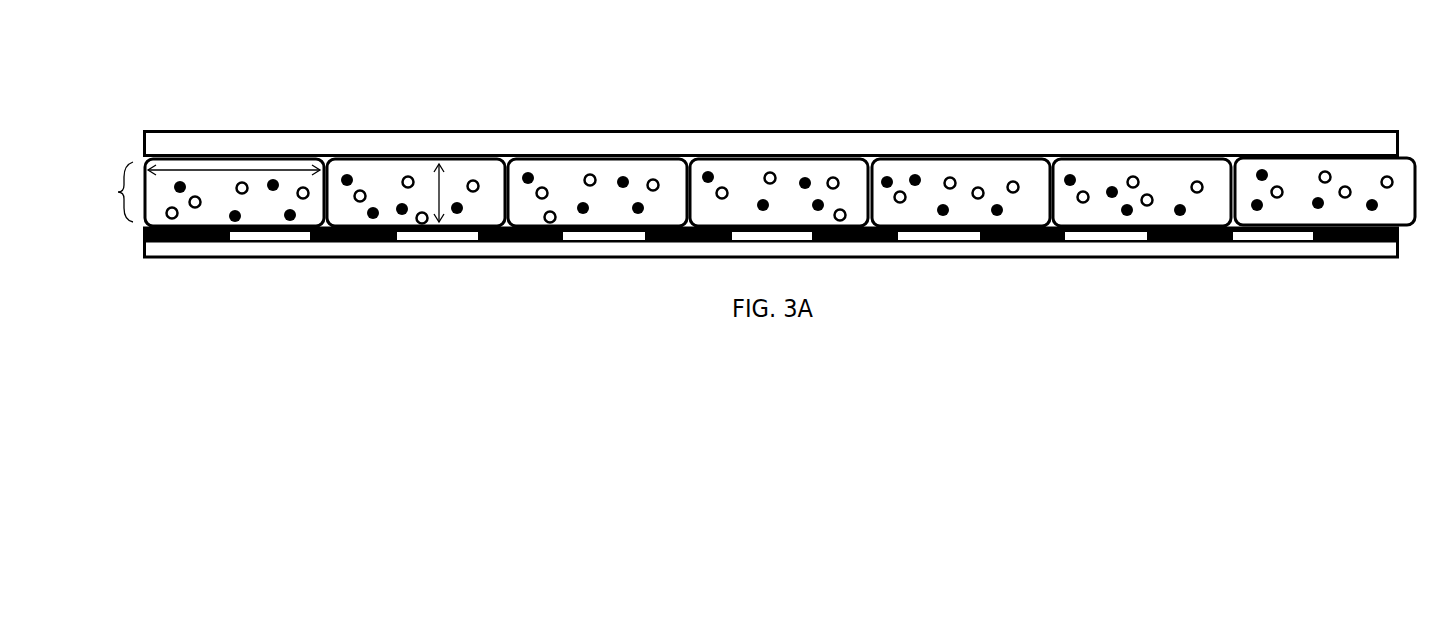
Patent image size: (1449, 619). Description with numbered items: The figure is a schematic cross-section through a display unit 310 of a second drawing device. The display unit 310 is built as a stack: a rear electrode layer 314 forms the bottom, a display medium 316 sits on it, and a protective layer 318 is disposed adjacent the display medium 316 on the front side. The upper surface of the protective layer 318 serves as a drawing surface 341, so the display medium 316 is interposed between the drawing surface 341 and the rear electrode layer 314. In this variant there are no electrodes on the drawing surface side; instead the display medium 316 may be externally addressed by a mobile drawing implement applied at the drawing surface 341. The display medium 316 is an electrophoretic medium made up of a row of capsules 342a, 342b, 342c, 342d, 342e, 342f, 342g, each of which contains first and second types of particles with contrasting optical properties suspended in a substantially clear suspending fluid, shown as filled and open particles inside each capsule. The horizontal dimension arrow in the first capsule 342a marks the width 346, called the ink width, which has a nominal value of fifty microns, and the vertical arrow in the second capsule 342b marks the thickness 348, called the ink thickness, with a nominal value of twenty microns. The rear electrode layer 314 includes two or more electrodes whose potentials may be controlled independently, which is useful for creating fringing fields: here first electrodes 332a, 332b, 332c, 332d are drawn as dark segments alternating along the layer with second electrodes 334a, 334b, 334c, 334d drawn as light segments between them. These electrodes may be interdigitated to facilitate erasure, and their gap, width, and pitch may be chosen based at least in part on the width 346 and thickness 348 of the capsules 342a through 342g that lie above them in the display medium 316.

The display unit 310 is at (793, 77).
The rear electrode layer 314 is at (1399, 229).
The display medium 316 is at (116, 200).
The protective layer 318 is at (1253, 140).
The drawing surface 341 is at (1325, 128).
The capsule 342a is at (323, 158).
The capsule 342b is at (505, 158).
The capsule 342c is at (687, 158).
The capsule 342d is at (868, 158).
The capsule 342e is at (1050, 158).
The capsule 342f is at (1198, 153).
The capsule 342g is at (1412, 158).
The width 346 is at (222, 168).
The thickness 348 is at (445, 170).
The first electrode 332a is at (218, 240).
The first electrode 332b is at (543, 243).
The first electrode 332c is at (888, 243).
The first electrode 332d is at (1165, 242).
The second electrode 334a is at (382, 241).
The second electrode 334b is at (667, 242).
The second electrode 334c is at (1050, 245).
The second electrode 334d is at (1328, 242).